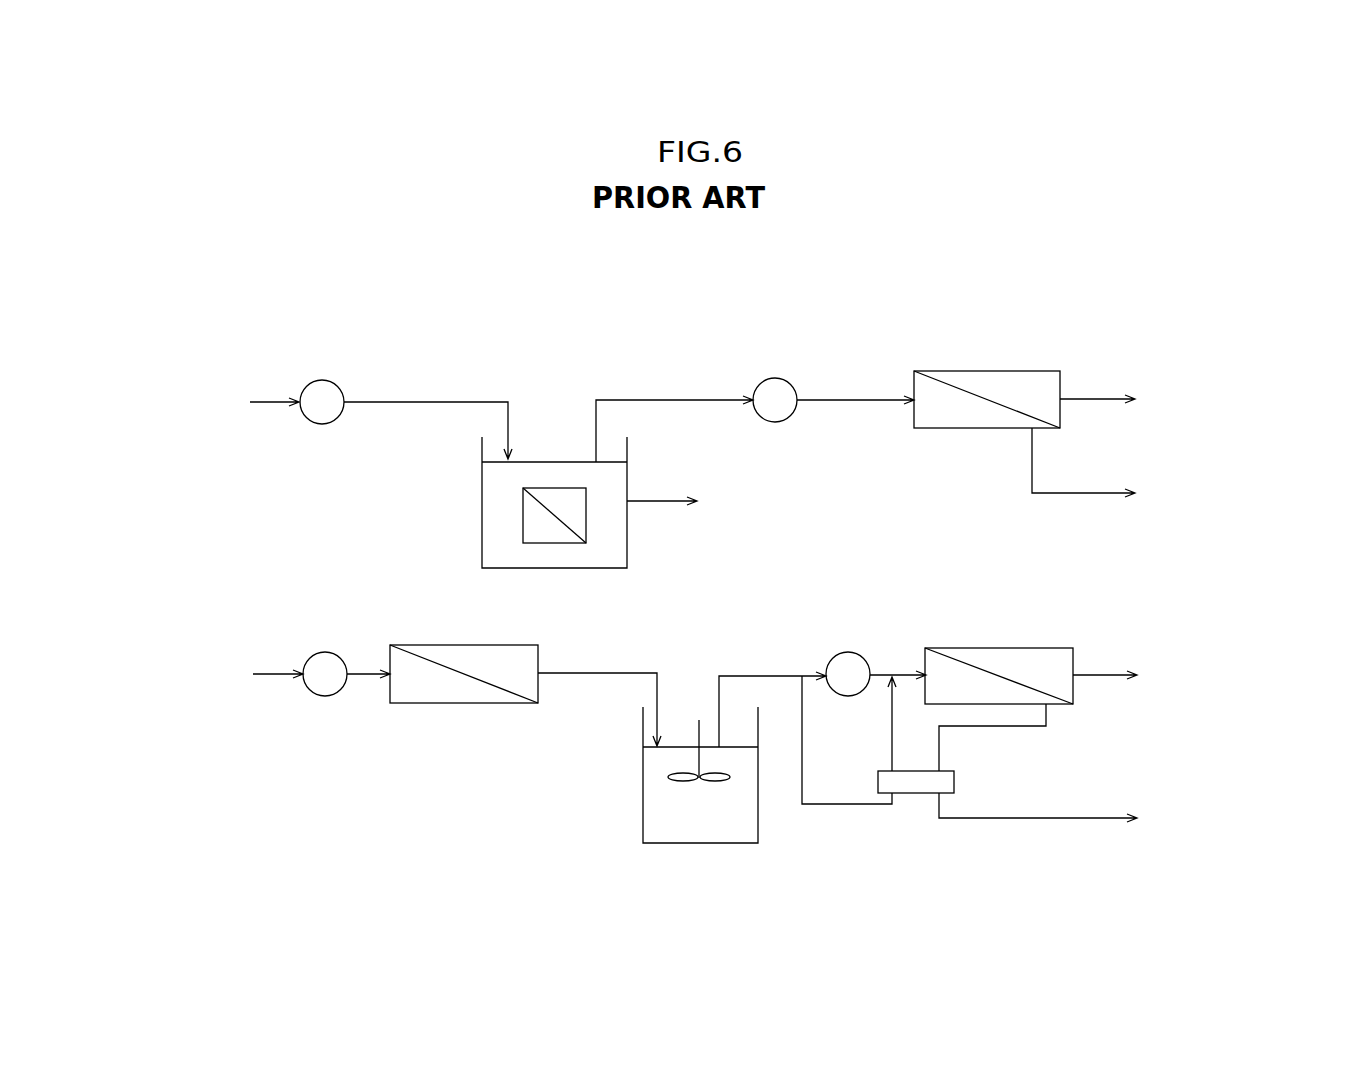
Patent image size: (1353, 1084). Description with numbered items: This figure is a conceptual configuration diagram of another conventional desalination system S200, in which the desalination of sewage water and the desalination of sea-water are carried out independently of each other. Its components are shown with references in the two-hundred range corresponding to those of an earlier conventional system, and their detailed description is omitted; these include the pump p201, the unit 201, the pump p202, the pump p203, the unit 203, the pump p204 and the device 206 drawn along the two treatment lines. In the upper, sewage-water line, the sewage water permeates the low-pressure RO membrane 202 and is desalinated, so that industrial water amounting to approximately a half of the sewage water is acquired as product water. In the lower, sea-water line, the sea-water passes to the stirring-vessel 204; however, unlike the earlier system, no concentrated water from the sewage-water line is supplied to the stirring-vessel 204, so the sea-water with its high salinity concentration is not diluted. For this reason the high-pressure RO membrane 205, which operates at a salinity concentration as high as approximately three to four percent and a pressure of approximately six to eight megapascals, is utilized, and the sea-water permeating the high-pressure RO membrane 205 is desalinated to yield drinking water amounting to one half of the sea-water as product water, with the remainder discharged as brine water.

The desalination system S200 is at (1004, 241).
The sewage water pump p201 is at (322, 379).
The membrane bioreactor tank 201 is at (482, 503).
The pump p202 is at (775, 378).
The low-pressure RO membrane 202 is at (960, 371).
The sea-water pump p203 is at (326, 651).
The pretreatment membrane unit 203 is at (432, 645).
The stirring-vessel 204 is at (643, 792).
The pump p204 is at (848, 652).
The high-pressure RO membrane 205 is at (970, 648).
The energy recovery device 206 is at (913, 795).